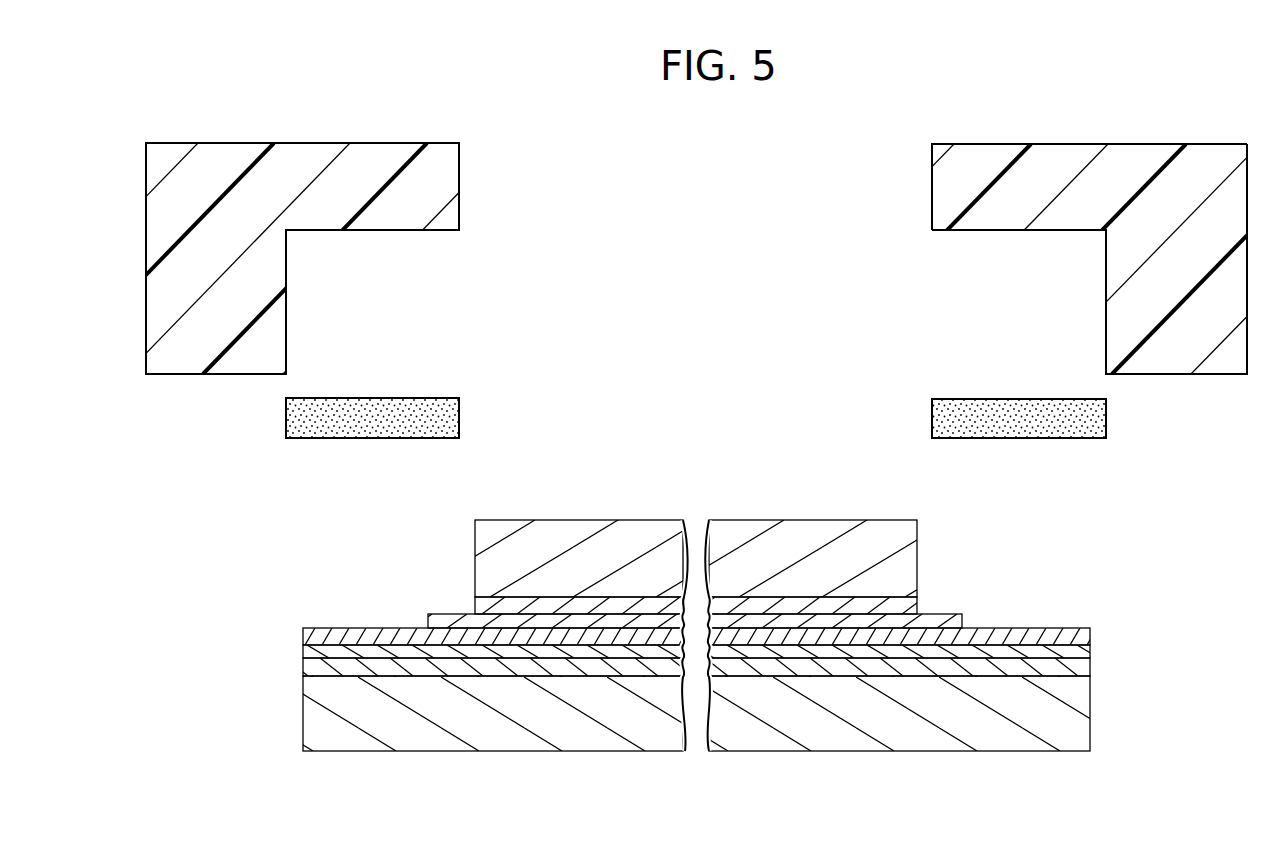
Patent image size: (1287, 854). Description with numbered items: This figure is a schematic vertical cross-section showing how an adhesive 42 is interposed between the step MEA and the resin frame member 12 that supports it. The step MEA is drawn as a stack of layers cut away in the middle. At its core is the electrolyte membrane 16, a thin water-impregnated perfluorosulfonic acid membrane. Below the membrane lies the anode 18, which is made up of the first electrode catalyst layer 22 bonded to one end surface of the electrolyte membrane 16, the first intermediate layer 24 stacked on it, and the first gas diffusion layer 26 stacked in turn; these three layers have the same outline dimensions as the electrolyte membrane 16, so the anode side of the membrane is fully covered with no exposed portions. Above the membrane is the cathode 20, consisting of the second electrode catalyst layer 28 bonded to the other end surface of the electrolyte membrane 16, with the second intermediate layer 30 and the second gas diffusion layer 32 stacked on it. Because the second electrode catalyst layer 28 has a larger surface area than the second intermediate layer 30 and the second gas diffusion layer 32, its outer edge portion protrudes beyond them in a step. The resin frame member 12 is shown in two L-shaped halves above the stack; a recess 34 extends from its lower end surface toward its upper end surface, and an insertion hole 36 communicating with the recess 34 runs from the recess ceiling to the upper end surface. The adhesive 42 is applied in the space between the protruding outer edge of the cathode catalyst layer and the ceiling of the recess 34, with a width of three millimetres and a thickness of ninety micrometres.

The resin frame member 12 is at (643, 258).
The recess 34 is at (1106, 322).
The insertion hole 36 is at (932, 205).
The adhesive 42 is at (993, 407).
The cathode 20 is at (736, 570).
The second gas diffusion layer 32 is at (910, 535).
The second intermediate layer 30 is at (914, 605).
The second electrode catalyst layer 28 is at (713, 601).
The electrolyte membrane 16 is at (1057, 630).
The anode 18 is at (696, 744).
The first electrode catalyst layer 22 is at (1052, 800).
The first intermediate layer 24 is at (990, 668).
The first gas diffusion layer 26 is at (1042, 652).